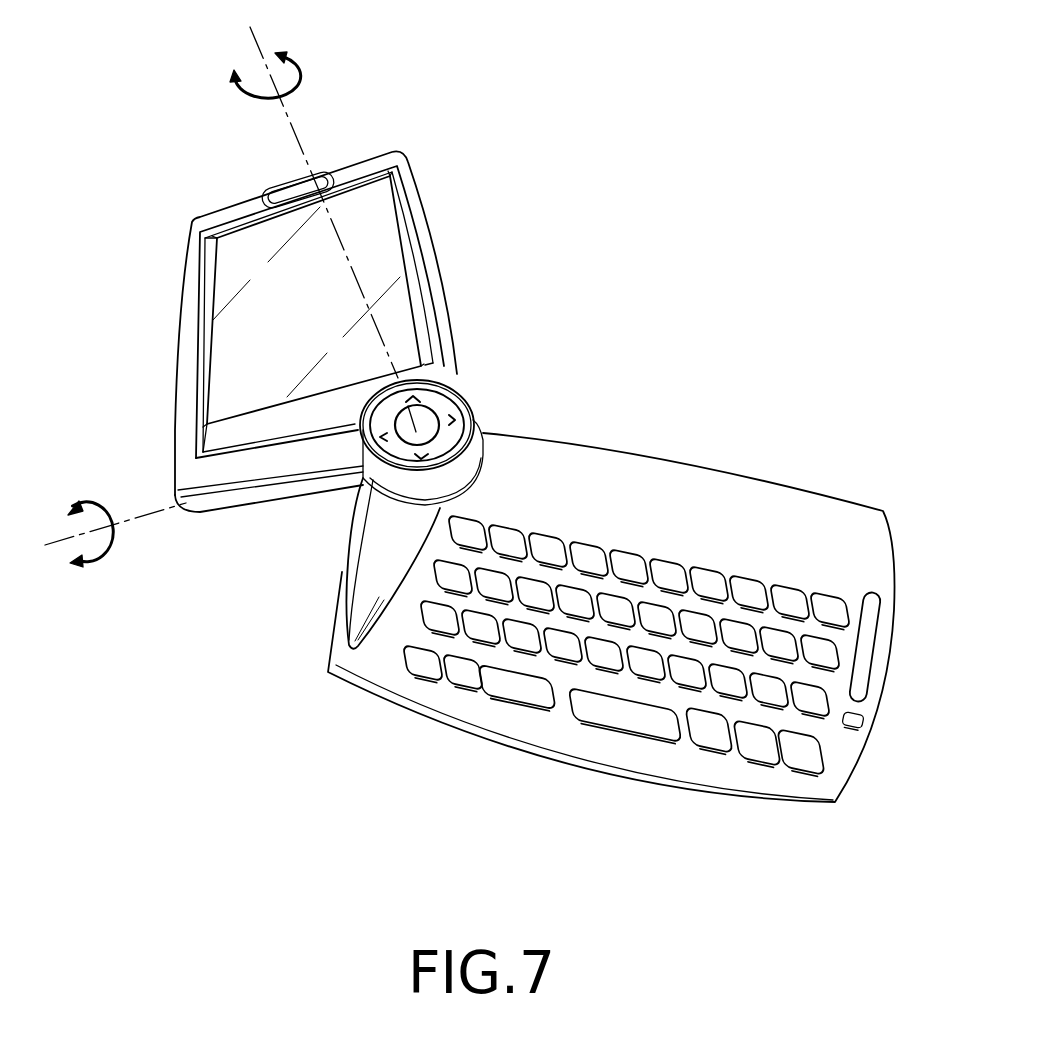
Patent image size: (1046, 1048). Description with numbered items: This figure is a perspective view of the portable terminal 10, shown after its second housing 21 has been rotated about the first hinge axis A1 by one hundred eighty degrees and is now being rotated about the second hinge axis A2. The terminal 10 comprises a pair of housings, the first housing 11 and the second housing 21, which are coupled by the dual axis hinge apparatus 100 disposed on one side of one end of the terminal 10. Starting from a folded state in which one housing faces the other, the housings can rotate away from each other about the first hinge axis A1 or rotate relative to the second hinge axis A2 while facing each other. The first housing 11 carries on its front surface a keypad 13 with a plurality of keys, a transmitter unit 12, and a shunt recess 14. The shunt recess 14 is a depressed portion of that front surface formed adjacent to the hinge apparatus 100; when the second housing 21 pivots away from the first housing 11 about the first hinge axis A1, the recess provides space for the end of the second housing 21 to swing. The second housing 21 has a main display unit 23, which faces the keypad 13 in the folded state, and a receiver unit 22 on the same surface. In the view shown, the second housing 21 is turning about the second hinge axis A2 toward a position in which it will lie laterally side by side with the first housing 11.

The portable terminal 10 is at (700, 114).
The first housing 11 is at (553, 768).
The transmitter unit 12 is at (862, 719).
The keypad 13 is at (707, 577).
The shunt recess 14 is at (360, 597).
The second housing 21 is at (440, 246).
The receiver unit 22 is at (272, 188).
The main display unit 23 is at (222, 349).
The dual axis hinge apparatus 100 is at (478, 406).
The first hinge axis A1 is at (59, 541).
The second hinge axis A2 is at (262, 52).